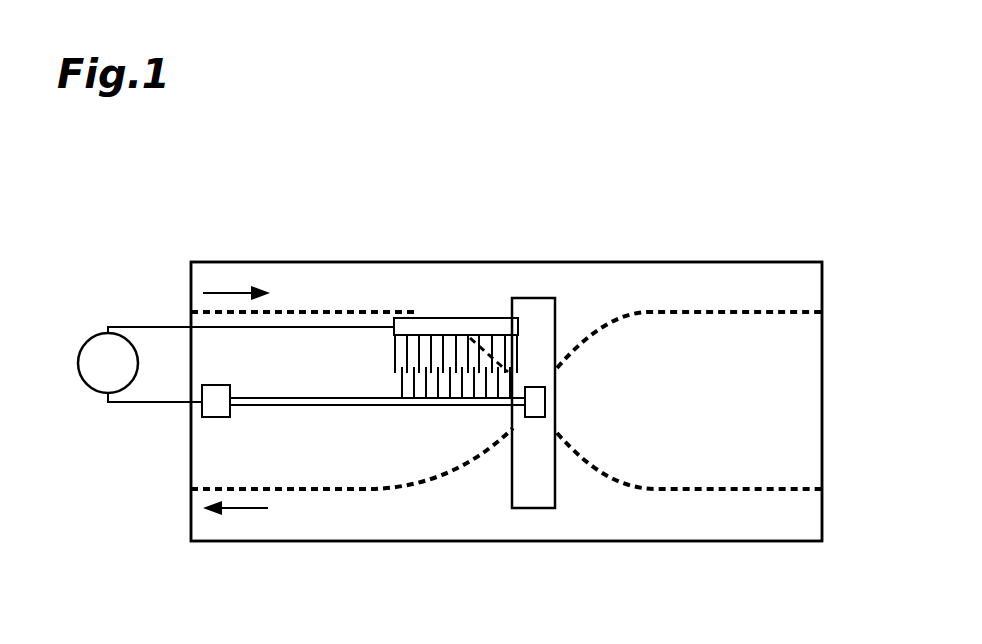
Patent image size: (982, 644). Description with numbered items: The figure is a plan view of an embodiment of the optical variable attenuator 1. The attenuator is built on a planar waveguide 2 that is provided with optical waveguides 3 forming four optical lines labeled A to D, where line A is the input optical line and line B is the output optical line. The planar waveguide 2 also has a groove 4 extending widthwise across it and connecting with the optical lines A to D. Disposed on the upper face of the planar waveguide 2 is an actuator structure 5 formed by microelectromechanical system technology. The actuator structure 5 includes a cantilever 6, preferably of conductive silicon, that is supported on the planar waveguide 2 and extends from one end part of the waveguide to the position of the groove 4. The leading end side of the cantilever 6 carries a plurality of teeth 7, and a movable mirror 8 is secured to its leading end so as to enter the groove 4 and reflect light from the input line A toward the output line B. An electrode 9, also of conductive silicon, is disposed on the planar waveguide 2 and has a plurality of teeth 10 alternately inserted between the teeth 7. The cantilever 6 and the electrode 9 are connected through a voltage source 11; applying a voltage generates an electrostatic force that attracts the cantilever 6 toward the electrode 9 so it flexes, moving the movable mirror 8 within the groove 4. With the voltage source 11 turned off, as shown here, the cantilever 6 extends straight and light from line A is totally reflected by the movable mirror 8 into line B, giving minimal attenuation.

The optical variable attenuator 1 is at (756, 130).
The planar waveguide 2 is at (805, 400).
The optical waveguides 3 is at (335, 312).
The groove 4 is at (528, 498).
The actuator structure 5 is at (250, 420).
The cantilever 6 is at (330, 405).
The teeth 7 is at (398, 386).
The movable mirror 8 is at (545, 397).
The electrode 9 is at (485, 328).
The teeth 10 is at (394, 347).
The voltage source 11 is at (78, 365).